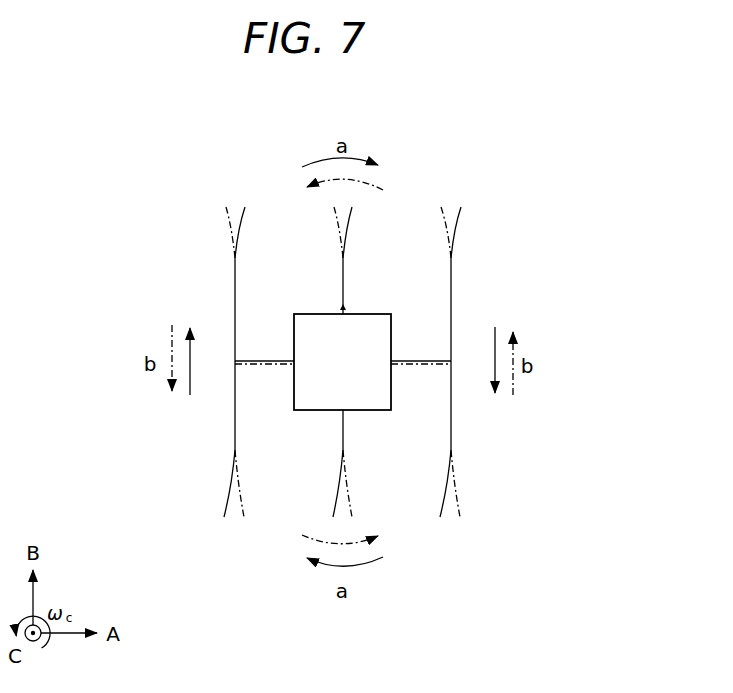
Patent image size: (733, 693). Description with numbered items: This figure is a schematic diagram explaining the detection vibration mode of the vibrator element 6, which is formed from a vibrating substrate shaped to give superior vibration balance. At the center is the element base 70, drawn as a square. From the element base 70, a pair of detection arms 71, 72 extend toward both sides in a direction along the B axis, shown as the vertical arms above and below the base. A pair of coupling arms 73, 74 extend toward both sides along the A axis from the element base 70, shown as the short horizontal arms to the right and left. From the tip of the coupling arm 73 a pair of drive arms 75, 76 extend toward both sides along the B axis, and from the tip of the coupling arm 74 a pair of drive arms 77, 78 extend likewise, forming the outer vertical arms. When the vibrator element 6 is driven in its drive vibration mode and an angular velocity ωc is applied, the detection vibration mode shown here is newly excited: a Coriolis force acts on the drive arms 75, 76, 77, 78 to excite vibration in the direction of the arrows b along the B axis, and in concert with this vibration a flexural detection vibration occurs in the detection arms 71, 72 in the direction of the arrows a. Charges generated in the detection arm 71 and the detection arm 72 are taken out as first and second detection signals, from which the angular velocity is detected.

The vibrator element 6 is at (536, 150).
The element base 70 is at (325, 330).
The detection arm 71 is at (346, 229).
The detection arm 72 is at (341, 491).
The coupling arm 73 is at (418, 360).
The coupling arm 74 is at (263, 360).
The drive arm 75 is at (454, 228).
The drive arm 76 is at (449, 491).
The drive arm 77 is at (238, 228).
The drive arm 78 is at (233, 491).